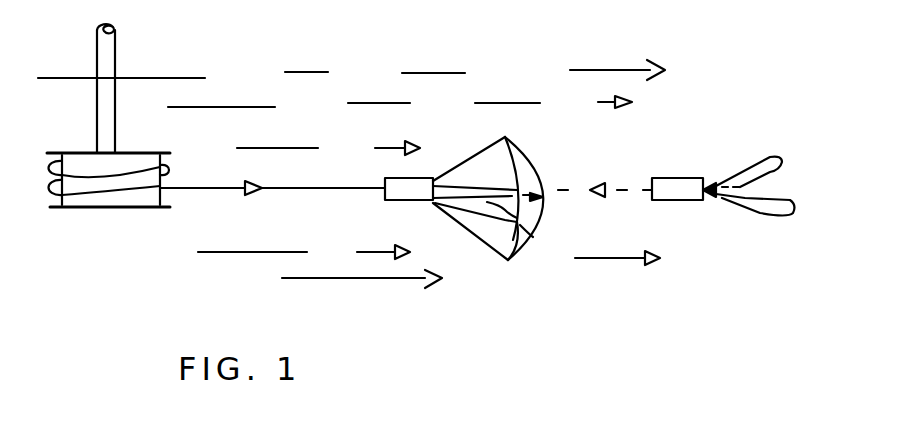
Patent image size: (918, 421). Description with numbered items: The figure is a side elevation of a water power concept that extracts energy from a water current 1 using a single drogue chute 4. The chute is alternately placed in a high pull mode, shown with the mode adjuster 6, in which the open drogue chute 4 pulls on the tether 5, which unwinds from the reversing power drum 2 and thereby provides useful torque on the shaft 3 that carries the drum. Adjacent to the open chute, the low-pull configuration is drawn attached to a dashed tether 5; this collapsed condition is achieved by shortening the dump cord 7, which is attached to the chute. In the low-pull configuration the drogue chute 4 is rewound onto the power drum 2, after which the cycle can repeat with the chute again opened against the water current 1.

The water current 1 is at (310, 72).
The reversing power drum 2 is at (90, 215).
The shaft 3 is at (122, 52).
The drogue chute 4 is at (542, 157).
The tether 5 is at (310, 195).
The mode adjuster 6 is at (408, 193).
The dump cord 7 is at (533, 237).